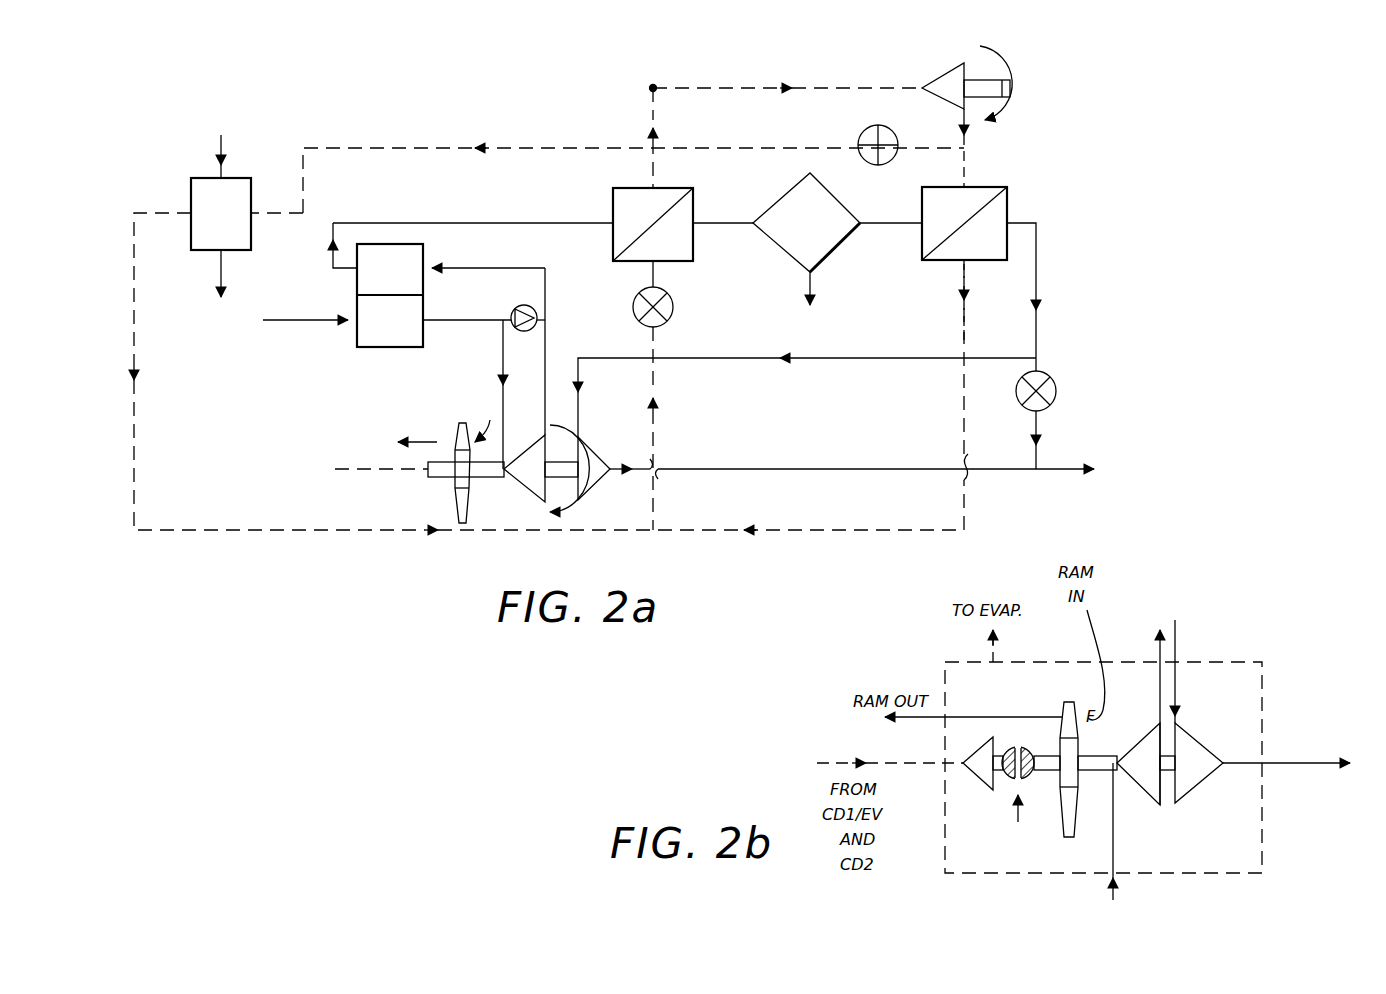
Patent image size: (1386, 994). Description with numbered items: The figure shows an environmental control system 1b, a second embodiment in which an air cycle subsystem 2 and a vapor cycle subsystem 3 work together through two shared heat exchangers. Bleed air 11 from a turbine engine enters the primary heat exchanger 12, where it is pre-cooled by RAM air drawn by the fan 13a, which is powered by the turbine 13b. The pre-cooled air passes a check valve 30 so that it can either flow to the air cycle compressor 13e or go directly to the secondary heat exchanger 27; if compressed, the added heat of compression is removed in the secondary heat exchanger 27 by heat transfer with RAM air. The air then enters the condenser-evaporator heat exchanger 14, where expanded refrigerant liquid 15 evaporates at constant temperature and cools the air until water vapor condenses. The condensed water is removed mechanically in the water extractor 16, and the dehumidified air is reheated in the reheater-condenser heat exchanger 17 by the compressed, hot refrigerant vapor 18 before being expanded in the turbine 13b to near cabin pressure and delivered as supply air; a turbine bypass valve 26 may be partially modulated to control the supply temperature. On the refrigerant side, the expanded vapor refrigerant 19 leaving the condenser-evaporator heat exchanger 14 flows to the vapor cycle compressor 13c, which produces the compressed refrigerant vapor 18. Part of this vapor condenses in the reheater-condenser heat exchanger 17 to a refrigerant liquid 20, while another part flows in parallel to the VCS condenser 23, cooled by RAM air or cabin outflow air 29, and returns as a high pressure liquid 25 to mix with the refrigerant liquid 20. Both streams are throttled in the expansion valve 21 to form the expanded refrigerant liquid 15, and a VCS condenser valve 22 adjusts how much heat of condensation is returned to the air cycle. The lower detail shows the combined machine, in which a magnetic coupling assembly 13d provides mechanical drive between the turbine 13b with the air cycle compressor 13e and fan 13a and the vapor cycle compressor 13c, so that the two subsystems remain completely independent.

In FIG. 2a, the environmental control system 1b is at (1108, 135).
In FIG. 2a, the air cycle subsystem 2 is at (517, 212).
In FIG. 2a, the vapor cycle subsystem 3 is at (378, 148).
In FIG. 2a, the bleed air 11 is at (285, 322).
In FIG. 2a, the primary heat exchanger 12 is at (368, 350).
In FIG. 2a, the fan 13a is at (455, 498).
In FIG. 2b, the fan 13a is at (1066, 700).
In FIG. 2a, the turbine 13b is at (594, 450).
In FIG. 2b, the turbine 13b is at (1200, 742).
In FIG. 2a, the vapor cycle compressor 13c is at (932, 88).
In FIG. 2b, the vapor cycle compressor 13c is at (975, 752).
In FIG. 2b, the magnetic coupling assembly 13d is at (1010, 815).
In FIG. 2a, the air cycle compressor 13e is at (526, 486).
In FIG. 2b, the air cycle compressor 13e is at (1133, 783).
In FIG. 2a, the condenser-evaporator heat exchanger 14 is at (613, 207).
In FIG. 2a, the expanded refrigerant liquid 15 is at (655, 277).
In FIG. 2a, the water extractor 16 is at (786, 200).
In FIG. 2a, the reheater-condenser heat exchanger 17 is at (1007, 207).
In FIG. 2a, the compressed refrigerant vapor 18 is at (967, 118).
In FIG. 2a, the expanded vapor refrigerant 19 is at (710, 88).
In FIG. 2a, the refrigerant liquid 20 is at (964, 285).
In FIG. 2a, the expansion valve 21 is at (635, 305).
In FIG. 2a, the VCS condenser valve 22 is at (866, 132).
In FIG. 2a, the VCS condenser 23 is at (191, 198).
In FIG. 2a, the high pressure liquid 25 is at (134, 318).
In FIG. 2a, the turbine bypass valve 26 is at (1050, 380).
In FIG. 2a, the secondary heat exchanger 27 is at (425, 260).
In FIG. 2a, the RAM air or cabin outflow air 29 is at (221, 146).
In FIG. 2a, the check valve 30 is at (517, 307).